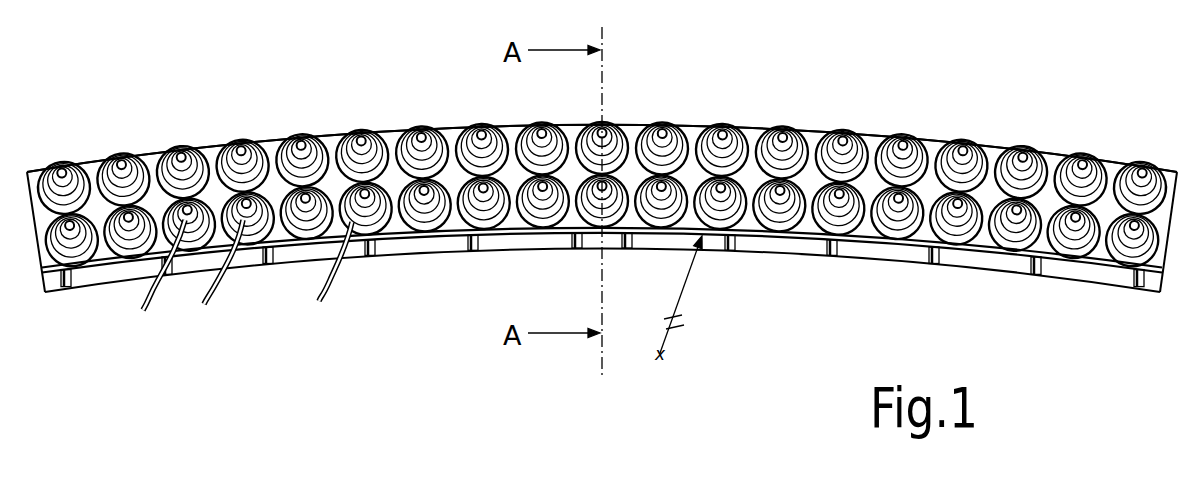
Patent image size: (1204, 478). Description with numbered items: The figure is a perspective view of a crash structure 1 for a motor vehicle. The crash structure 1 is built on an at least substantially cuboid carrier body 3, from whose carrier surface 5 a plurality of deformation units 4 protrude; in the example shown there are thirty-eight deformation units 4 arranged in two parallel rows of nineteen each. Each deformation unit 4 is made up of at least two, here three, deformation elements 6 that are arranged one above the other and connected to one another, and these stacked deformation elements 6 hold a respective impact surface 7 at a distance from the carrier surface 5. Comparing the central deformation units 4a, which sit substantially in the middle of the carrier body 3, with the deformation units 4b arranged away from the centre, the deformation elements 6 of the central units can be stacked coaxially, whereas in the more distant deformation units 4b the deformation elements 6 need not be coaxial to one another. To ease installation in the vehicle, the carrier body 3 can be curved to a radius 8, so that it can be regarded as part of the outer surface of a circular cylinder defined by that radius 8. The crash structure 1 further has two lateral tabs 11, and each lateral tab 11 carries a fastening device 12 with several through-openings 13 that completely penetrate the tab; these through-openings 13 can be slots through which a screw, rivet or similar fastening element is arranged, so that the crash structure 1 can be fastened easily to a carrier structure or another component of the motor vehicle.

The crash structure 1 is at (602, 185).
The carrier body 3 is at (450, 124).
The deformation unit 4 is at (781, 134).
The central deformation unit 4a is at (605, 124).
The outer deformation unit 4b is at (60, 170).
The carrier surface 5 is at (330, 138).
The deformation element 6 is at (240, 279).
The impact surface 7 is at (177, 146).
The radius 8 is at (685, 291).
The lateral tab 11 is at (1068, 288).
The fastening device 12 is at (602, 278).
The through-opening 13 is at (823, 264).